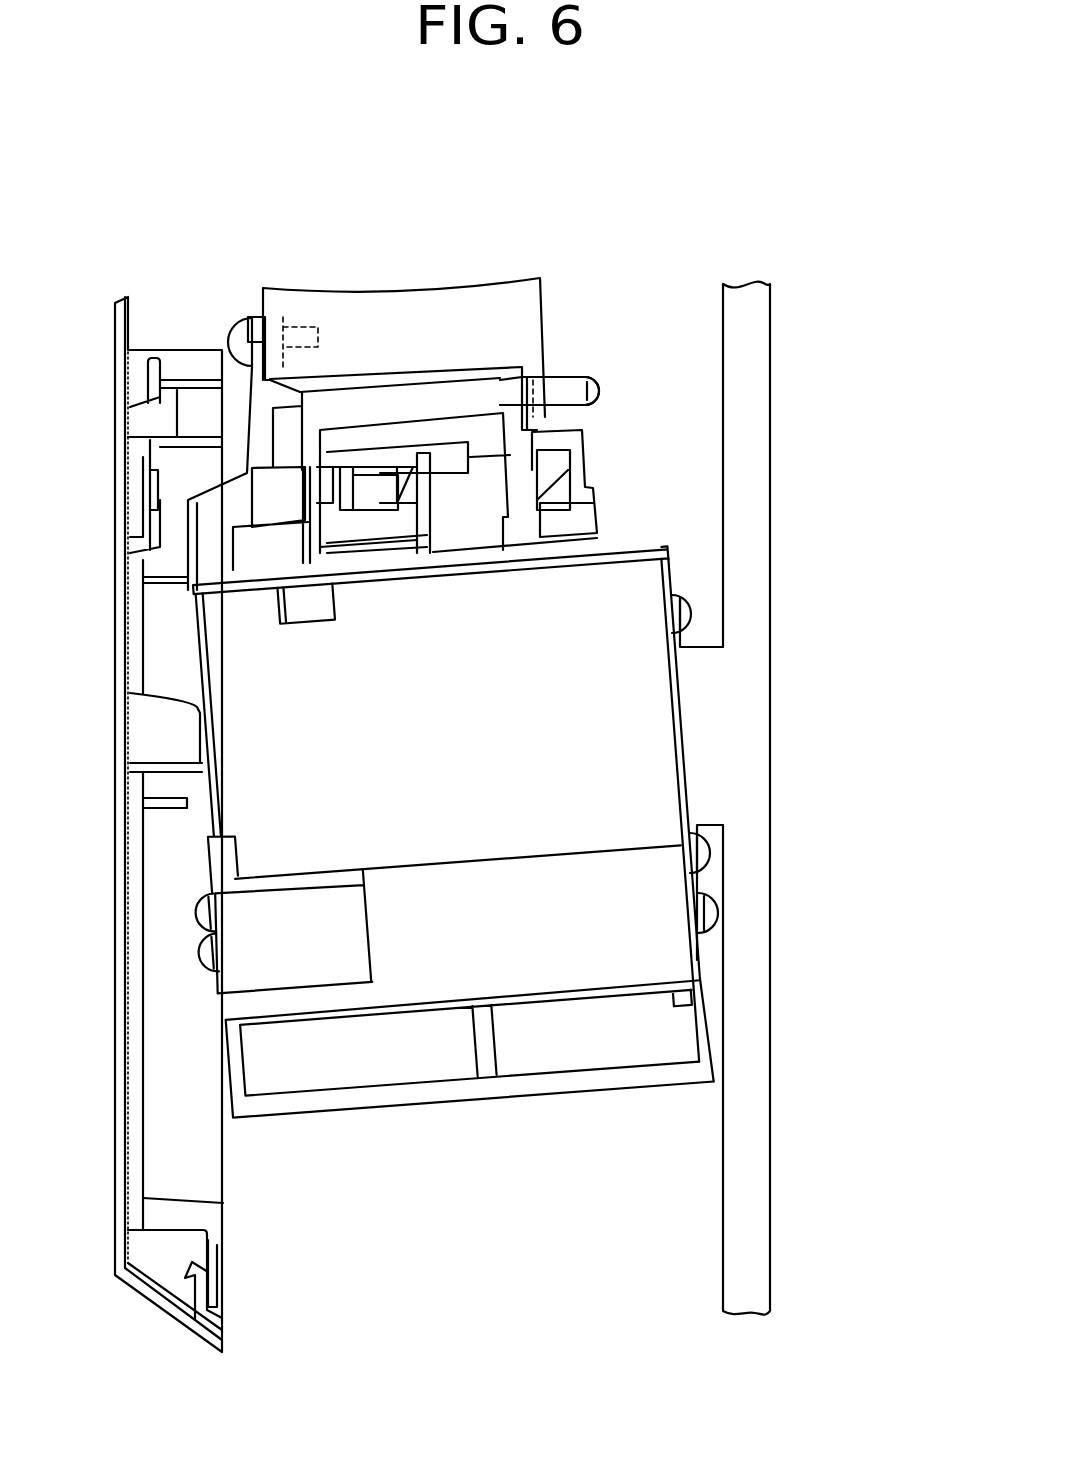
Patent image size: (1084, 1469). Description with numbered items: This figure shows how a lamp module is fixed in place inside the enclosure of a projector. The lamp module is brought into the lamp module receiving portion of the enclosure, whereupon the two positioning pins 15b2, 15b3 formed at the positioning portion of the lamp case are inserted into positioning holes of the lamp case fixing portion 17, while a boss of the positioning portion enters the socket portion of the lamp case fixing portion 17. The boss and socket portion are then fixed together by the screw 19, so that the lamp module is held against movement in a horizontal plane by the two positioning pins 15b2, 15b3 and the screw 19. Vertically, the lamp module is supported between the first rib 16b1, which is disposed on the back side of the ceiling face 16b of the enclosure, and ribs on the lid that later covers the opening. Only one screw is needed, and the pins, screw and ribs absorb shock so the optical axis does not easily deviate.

The screw 19 is at (232, 318).
The lamp case fixing portion 17 is at (386, 298).
The positioning pin 15b2 is at (573, 378).
The positioning pin 15b3 is at (549, 391).
The ceiling face 16b is at (770, 482).
The first rib 16b1 is at (713, 770).